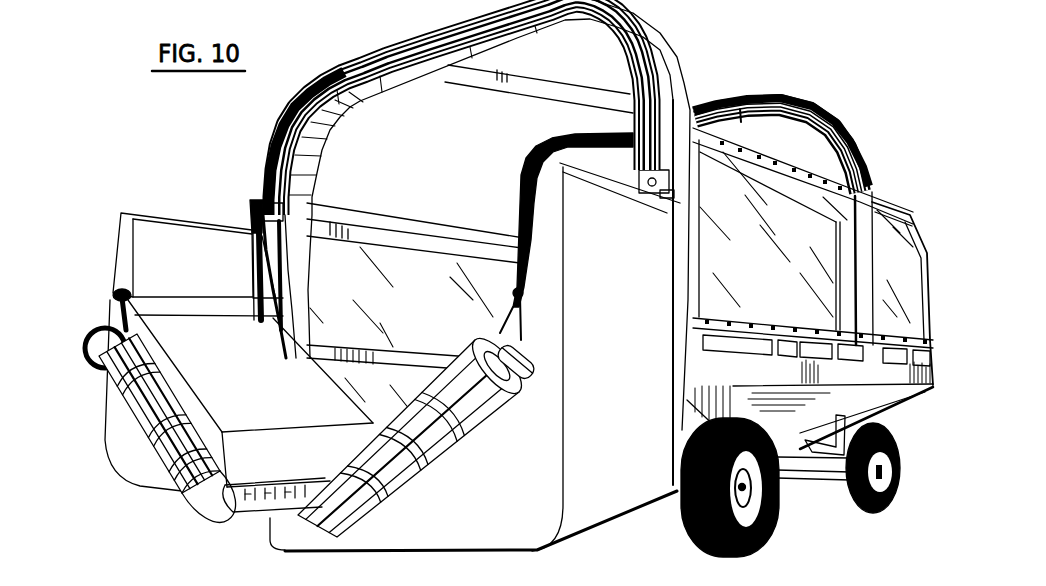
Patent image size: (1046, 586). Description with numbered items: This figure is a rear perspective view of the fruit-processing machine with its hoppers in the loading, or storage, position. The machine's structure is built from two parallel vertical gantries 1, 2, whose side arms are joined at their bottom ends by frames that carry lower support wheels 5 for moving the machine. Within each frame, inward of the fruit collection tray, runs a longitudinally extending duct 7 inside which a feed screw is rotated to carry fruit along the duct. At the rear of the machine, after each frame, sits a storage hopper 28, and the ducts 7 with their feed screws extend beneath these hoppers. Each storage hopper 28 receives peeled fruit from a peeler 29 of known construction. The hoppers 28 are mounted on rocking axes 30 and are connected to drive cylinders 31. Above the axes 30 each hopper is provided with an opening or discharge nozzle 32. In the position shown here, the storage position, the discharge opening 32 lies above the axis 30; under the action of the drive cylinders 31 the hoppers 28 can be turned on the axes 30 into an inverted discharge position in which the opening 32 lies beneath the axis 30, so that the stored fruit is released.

The vertical gantry 1 is at (797, 97).
The vertical gantry 2 is at (640, 43).
The lower support wheel 5 is at (773, 538).
The longitudinally extending duct 7 is at (247, 523).
The storage hopper 28 is at (120, 440).
The peeler 29 is at (153, 460).
The rocking axis 30 is at (115, 293).
The drive cylinder 31 is at (250, 230).
The discharge nozzle 32 is at (172, 243).